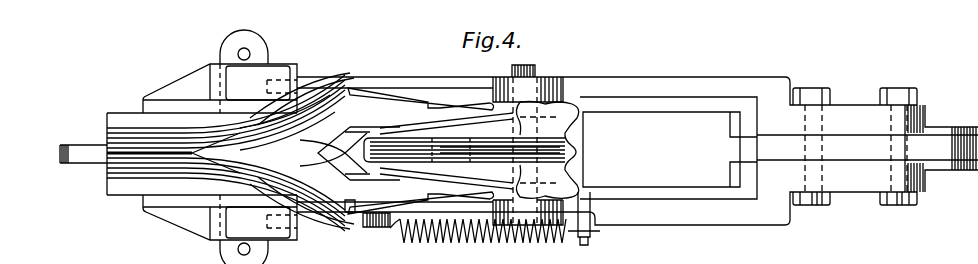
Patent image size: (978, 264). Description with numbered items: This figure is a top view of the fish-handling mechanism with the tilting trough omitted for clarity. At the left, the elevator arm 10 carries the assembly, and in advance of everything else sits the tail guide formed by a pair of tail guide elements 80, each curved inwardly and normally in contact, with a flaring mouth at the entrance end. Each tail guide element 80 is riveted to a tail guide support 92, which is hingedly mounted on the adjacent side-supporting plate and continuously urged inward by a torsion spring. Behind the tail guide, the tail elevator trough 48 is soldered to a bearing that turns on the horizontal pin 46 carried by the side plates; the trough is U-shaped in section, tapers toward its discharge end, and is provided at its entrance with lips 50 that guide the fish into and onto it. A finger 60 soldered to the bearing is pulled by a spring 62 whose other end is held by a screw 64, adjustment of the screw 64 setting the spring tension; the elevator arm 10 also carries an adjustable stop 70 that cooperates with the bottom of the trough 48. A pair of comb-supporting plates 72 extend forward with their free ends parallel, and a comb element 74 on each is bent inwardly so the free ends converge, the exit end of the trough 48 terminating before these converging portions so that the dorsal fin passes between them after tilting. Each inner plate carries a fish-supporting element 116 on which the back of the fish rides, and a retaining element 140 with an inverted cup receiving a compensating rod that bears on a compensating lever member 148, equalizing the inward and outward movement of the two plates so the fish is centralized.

The elevator arm 10 is at (868, 158).
The horizontal pin 46 is at (536, 66).
The tail elevator trough 48 is at (446, 136).
The lips 50 is at (570, 102).
The finger 60 is at (592, 233).
The spring 62 is at (495, 243).
The screw 64 is at (378, 228).
The adjustable stop 70 is at (471, 157).
The comb-supporting plates 72 is at (357, 86).
The comb element 74 is at (342, 173).
The tail guide elements 80 is at (107, 125).
The tail guide support 92 is at (168, 88).
The fish-supporting element 116 is at (292, 163).
The retaining element 140 is at (262, 47).
The compensating lever member 148 is at (765, 219).